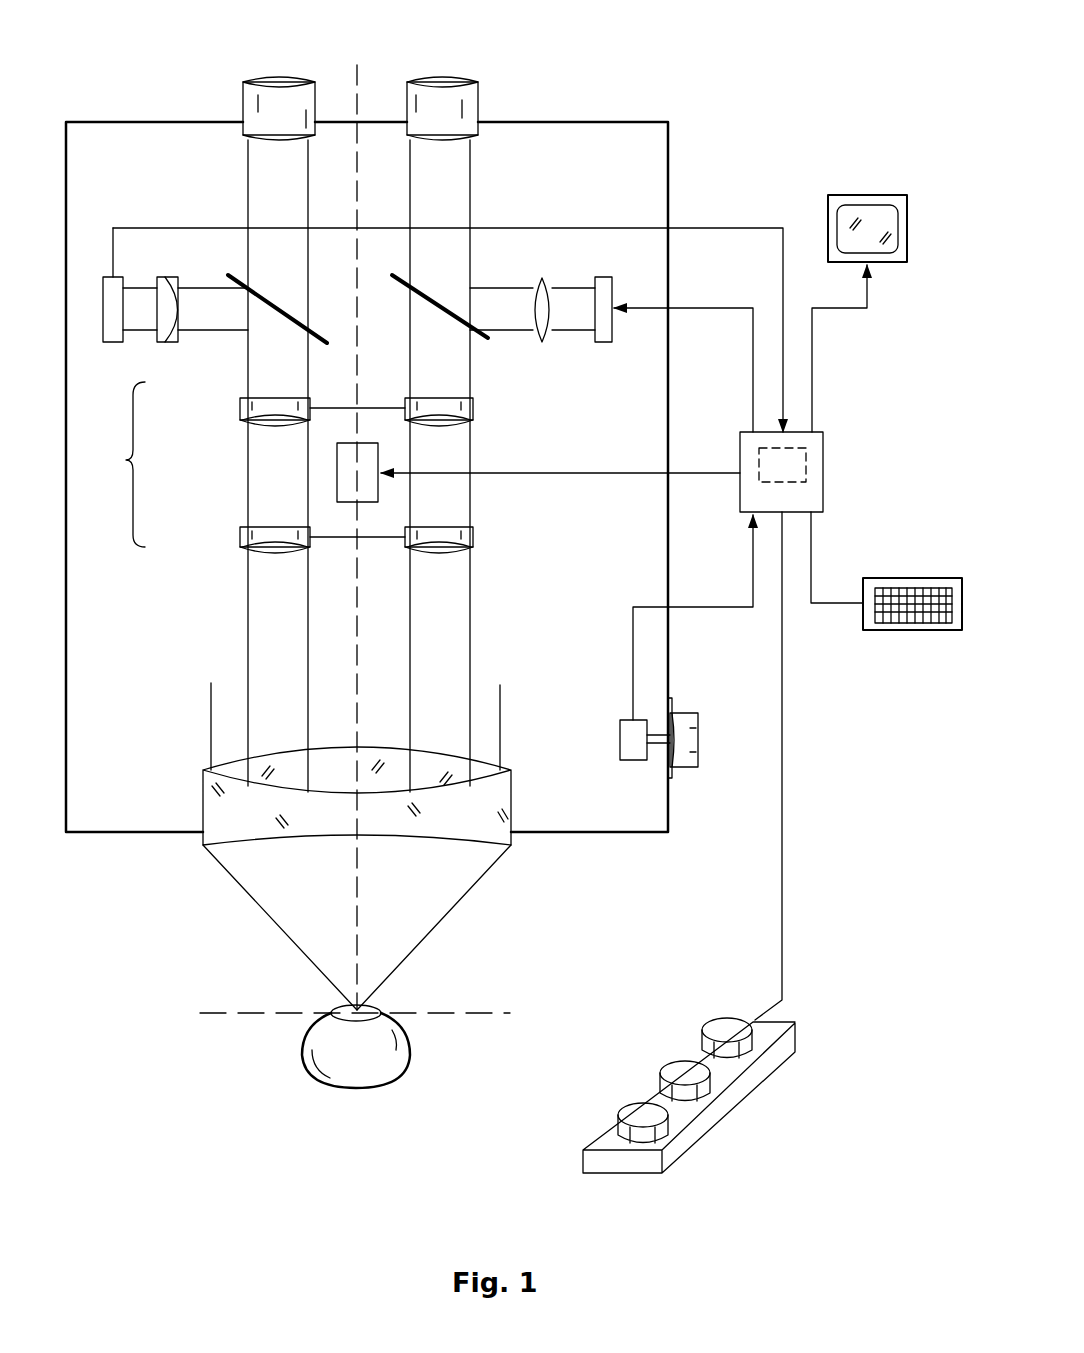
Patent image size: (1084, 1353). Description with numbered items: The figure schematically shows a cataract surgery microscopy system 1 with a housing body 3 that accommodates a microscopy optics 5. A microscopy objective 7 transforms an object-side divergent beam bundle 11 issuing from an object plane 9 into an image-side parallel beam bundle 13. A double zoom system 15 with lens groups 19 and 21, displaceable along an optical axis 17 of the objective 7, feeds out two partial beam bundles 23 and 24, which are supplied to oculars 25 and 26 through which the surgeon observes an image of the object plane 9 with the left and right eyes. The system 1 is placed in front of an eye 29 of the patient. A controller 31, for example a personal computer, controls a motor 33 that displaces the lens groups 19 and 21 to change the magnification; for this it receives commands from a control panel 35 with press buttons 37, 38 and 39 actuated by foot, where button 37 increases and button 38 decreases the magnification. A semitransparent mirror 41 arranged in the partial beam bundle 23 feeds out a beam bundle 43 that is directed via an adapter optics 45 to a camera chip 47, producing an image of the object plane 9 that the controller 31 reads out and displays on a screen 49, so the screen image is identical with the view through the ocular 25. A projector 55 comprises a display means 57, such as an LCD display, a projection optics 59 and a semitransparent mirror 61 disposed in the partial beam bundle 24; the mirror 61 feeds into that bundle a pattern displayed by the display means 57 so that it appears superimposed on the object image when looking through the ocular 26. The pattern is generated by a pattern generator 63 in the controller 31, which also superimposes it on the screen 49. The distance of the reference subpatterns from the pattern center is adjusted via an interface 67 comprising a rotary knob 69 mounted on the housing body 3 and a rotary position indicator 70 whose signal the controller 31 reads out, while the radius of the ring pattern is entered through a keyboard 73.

The cataract surgery microscopy system 1 is at (768, 73).
The housing body 3 is at (562, 122).
The microscopy optics 5 is at (520, 220).
The microscopy objective 7 is at (510, 808).
The object plane 9 is at (460, 1013).
The object-side divergent beam bundle 11 is at (453, 907).
The image-side parallel beam bundle 13 is at (211, 725).
The double zoom system 15 is at (116, 464).
The optical axis 17 is at (357, 907).
The lens group 19 is at (240, 537).
The lens group 21 is at (240, 410).
The partial beam bundle 23 is at (248, 372).
The partial beam bundle 24 is at (470, 360).
The ocular 25 is at (243, 95).
The ocular 26 is at (478, 95).
The eye 29 is at (367, 1073).
The controller 31 is at (823, 498).
The motor 33 is at (337, 478).
The control panel 35 is at (720, 1118).
The press button 37 is at (632, 1110).
The press button 38 is at (675, 1068).
The press button 39 is at (718, 1028).
The semitransparent mirror 41 is at (312, 333).
The beam bundle 43 is at (212, 288).
The adapter optics 45 is at (167, 278).
The camera chip 47 is at (113, 342).
The screen 49 is at (868, 195).
The projector 55 is at (620, 353).
The display means 57 is at (615, 285).
The projection optics 59 is at (552, 300).
The semitransparent mirror 61 is at (397, 280).
The pattern generator 63 is at (806, 458).
The interface 67 is at (690, 785).
The rotary knob 69 is at (698, 738).
The rotary position indicator 70 is at (627, 720).
The keyboard 73 is at (920, 630).